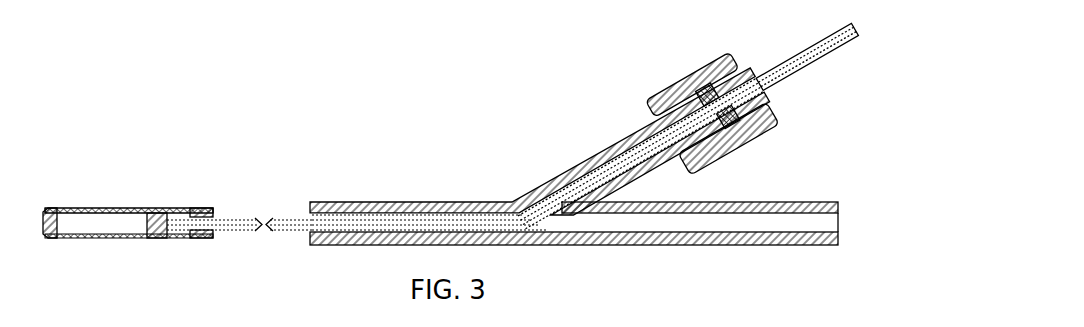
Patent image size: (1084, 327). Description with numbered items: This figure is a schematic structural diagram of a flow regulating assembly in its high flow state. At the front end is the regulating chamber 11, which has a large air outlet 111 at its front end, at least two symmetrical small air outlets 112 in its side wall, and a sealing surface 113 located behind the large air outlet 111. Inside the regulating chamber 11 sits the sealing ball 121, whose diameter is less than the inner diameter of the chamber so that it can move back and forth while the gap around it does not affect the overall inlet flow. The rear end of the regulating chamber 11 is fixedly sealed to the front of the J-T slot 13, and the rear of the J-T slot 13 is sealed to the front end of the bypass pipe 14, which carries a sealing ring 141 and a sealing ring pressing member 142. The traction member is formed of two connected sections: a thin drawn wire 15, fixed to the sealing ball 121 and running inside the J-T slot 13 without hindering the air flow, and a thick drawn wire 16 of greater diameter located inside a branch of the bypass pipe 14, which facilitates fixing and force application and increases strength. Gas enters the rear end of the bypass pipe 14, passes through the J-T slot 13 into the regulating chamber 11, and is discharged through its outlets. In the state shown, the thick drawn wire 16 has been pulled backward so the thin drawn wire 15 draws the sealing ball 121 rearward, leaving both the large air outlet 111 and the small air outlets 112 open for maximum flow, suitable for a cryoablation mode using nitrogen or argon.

The regulating chamber 11 is at (140, 208).
The large air outlet 111 is at (44, 207).
The small air outlets 112 is at (88, 229).
The sealing surface 113 is at (56, 209).
The sealing ball 121 is at (170, 210).
The J-T slot 13 is at (232, 213).
The bypass pipe 14 is at (432, 208).
The thin drawn wire 15 is at (383, 220).
The sealing ring 141 is at (700, 72).
The sealing ring pressing member 142 is at (727, 56).
The thick drawn wire 16 is at (777, 63).